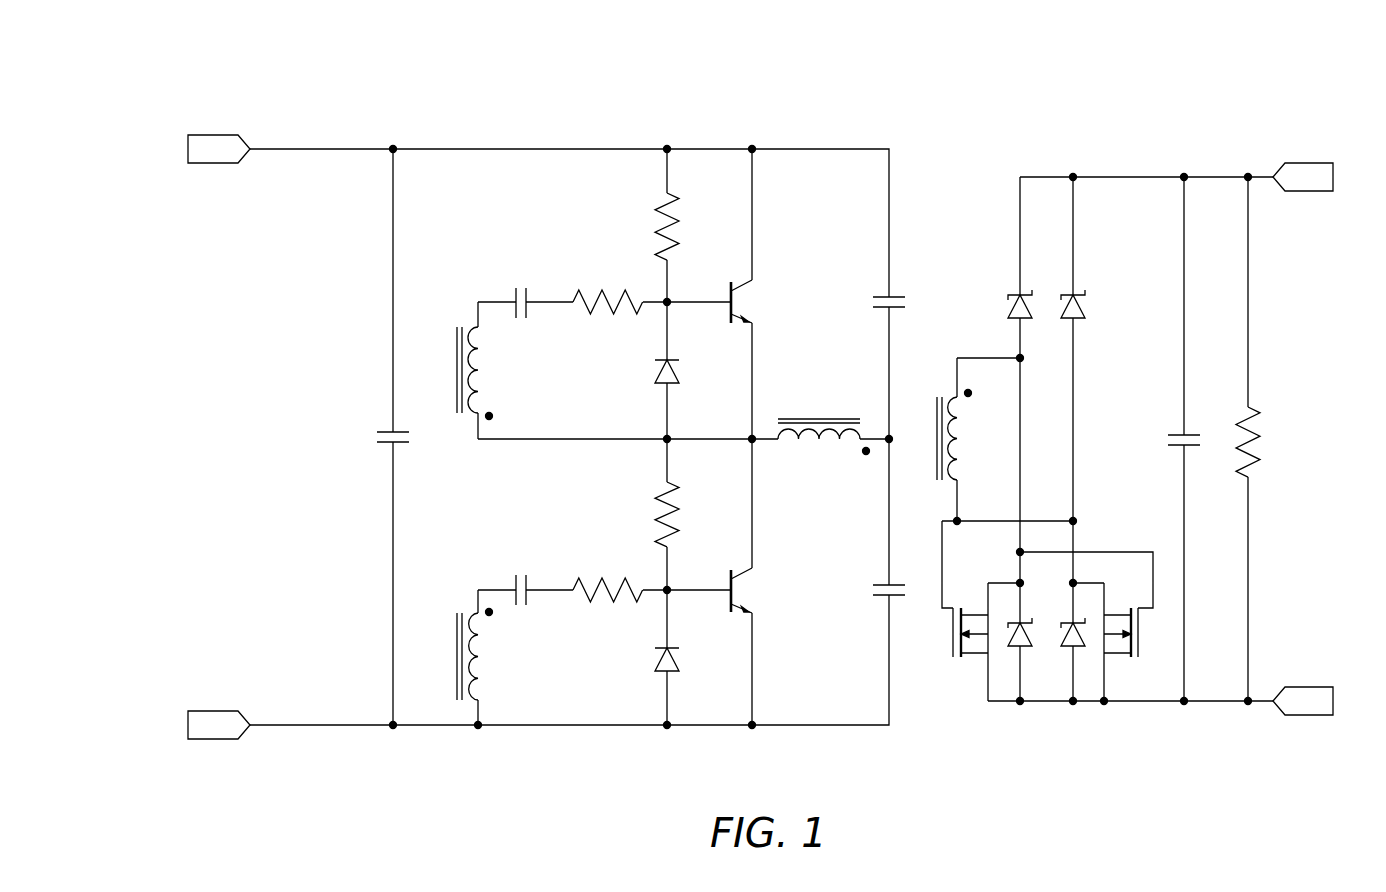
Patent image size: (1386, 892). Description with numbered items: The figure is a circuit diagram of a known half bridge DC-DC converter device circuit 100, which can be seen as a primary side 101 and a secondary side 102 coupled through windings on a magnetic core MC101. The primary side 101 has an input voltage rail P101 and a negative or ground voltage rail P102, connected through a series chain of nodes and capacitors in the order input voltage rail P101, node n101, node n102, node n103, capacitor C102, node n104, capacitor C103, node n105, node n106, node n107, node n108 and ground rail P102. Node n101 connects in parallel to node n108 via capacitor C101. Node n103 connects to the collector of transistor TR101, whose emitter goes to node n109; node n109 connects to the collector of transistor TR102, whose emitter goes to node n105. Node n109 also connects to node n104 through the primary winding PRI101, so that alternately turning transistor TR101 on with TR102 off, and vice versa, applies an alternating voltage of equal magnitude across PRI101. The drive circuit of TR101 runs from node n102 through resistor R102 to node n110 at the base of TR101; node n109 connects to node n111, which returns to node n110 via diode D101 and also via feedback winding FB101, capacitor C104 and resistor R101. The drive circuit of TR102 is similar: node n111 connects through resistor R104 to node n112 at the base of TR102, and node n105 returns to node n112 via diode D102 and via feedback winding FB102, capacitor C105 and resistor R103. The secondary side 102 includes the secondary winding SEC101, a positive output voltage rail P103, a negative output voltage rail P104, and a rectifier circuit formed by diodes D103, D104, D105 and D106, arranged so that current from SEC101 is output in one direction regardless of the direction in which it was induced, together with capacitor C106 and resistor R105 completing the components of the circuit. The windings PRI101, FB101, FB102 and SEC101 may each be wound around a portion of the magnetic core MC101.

The half bridge DC-DC converter device circuit 100 is at (310, 69).
The primary side 101 is at (523, 147).
The secondary side 102 is at (1132, 175).
The input voltage rail P101 is at (216, 134).
The negative or ground voltage rail P102 is at (216, 740).
The positive output voltage rail P103 is at (1300, 162).
The negative output voltage rail P104 is at (1300, 716).
The node n101 is at (393, 147).
The node n102 is at (667, 147).
The node n103 is at (752, 147).
The node n104 is at (887, 436).
The node n105 is at (752, 728).
The node n106 is at (667, 728).
The node n107 is at (478, 728).
The node n108 is at (393, 728).
The node n109 is at (749, 437).
The node n110 is at (670, 300).
The node n111 is at (664, 437).
The node n112 is at (700, 573).
The capacitor C101 is at (377, 437).
The capacitor C102 is at (872, 302).
The capacitor C103 is at (872, 590).
The capacitor C104 is at (521, 286).
The capacitor C105 is at (521, 574).
The capacitor C106 is at (1167, 440).
The resistor R101 is at (603, 298).
The resistor R102 is at (660, 198).
The resistor R103 is at (603, 586).
The resistor R104 is at (660, 487).
The resistor R105 is at (1262, 440).
The diode D101 is at (655, 372).
The diode D102 is at (655, 660).
The diode D103 is at (1007, 308).
The diode D104 is at (1088, 308).
The diode D105 is at (1007, 642).
The diode D106 is at (1077, 650).
The transistor TR101 is at (747, 291).
The transistor TR102 is at (747, 580).
The feedback winding FB101 is at (472, 325).
The feedback winding FB102 is at (472, 612).
The primary winding PRI101 is at (812, 442).
The secondary winding SEC101 is at (950, 441).
The magnetic core MC101 is at (933, 398).